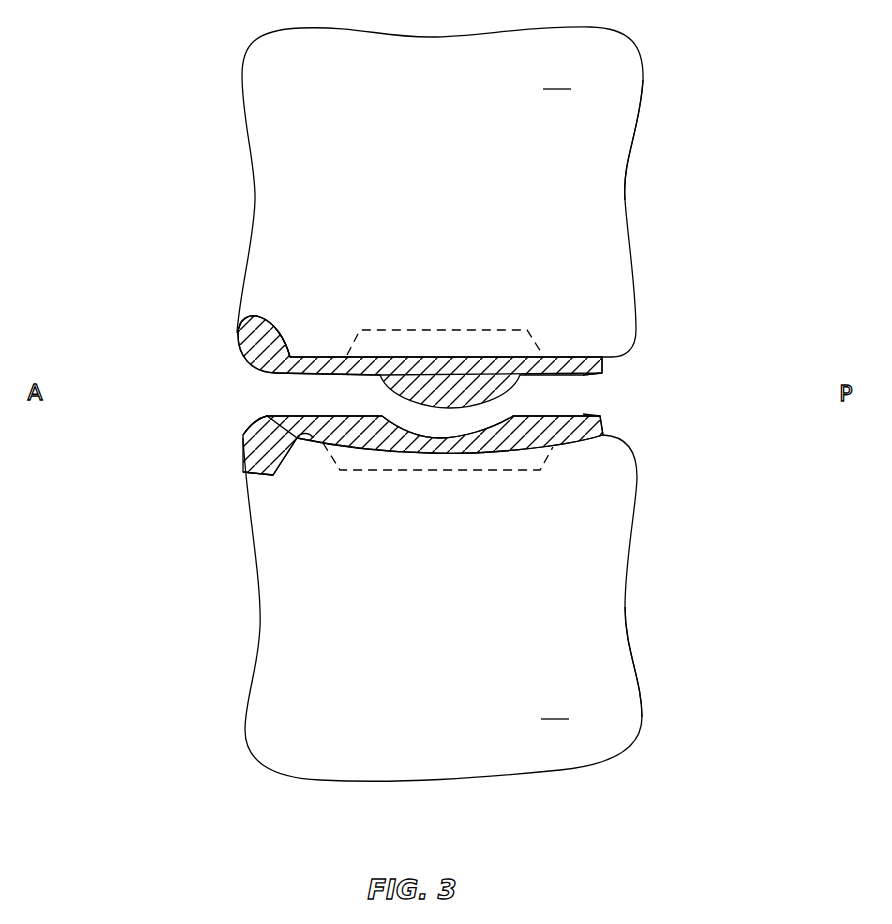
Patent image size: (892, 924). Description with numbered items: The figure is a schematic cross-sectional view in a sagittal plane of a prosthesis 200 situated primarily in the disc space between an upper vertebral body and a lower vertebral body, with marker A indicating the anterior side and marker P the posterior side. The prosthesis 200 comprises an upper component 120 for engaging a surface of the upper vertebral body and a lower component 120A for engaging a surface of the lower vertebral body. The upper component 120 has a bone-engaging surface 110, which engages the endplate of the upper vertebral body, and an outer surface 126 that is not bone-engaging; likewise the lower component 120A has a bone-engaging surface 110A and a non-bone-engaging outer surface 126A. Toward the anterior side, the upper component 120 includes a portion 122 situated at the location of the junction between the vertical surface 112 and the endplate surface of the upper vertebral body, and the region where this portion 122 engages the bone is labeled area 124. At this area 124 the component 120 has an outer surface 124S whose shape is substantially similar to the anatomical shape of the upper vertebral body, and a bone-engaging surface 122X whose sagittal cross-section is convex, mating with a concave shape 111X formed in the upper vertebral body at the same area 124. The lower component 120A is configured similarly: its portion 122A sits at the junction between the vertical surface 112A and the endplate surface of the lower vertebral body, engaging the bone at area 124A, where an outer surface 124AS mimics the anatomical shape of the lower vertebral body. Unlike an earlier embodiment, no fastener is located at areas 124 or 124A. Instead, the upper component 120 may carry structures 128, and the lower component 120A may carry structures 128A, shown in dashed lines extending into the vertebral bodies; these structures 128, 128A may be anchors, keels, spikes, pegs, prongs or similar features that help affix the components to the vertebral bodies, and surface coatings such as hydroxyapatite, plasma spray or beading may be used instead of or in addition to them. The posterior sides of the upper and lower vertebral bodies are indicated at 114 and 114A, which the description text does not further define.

The bone-engaging surface 110 is at (315, 357).
The bone-engaging surface 110A is at (296, 439).
The concave shape 111X is at (268, 375).
The vertical surface 112 is at (245, 127).
The vertical surface 112A is at (253, 567).
The posterior side of upper vertebra 114 is at (627, 170).
The posterior side of lower vertebra 114A is at (627, 558).
The component 120 is at (632, 355).
The component 120A is at (620, 423).
The portion 122 is at (255, 363).
The portion 122A is at (295, 437).
The bone-engaging surface 122X is at (277, 327).
The area 124 is at (224, 334).
The area 124A is at (234, 455).
The outer surface 124S is at (237, 350).
The outer surface 124AS is at (243, 438).
The outer surface 126 is at (583, 375).
The outer surface 126A is at (583, 414).
The structures 128 is at (500, 328).
The structures 128A is at (485, 470).
The prosthesis 200 is at (632, 389).